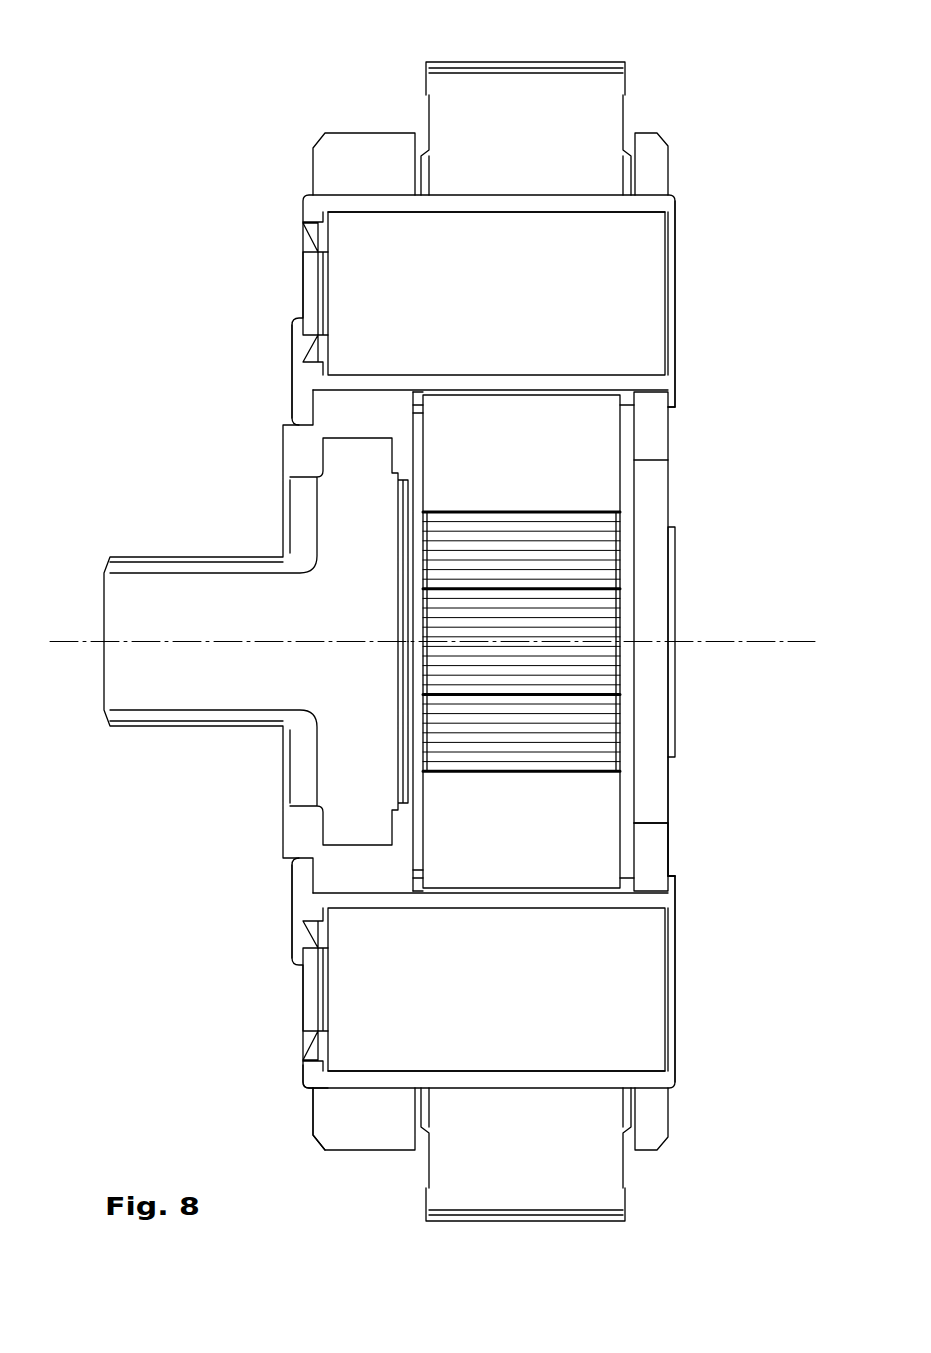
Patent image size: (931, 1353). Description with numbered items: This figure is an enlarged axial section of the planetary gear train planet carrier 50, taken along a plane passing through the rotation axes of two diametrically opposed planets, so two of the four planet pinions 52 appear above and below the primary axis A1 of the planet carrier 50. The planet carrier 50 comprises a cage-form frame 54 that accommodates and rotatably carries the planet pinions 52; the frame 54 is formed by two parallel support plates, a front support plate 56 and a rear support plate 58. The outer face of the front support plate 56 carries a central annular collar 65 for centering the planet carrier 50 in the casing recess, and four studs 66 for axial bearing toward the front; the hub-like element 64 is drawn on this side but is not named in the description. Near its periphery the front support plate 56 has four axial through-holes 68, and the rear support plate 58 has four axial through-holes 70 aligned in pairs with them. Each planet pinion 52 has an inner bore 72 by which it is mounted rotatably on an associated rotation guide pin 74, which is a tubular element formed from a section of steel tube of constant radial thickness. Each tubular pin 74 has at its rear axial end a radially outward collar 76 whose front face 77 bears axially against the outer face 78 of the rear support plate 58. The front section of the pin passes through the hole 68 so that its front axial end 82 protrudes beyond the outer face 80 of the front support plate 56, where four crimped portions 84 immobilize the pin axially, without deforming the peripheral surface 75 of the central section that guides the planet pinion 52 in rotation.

The planet carrier 50 is at (750, 320).
The planet pinion 52 is at (571, 44).
The frame 54 is at (307, 126).
The front support plate 56 is at (340, 1160).
The rear support plate 58 is at (651, 1160).
The hub / shaft 64 is at (160, 748).
The central annular collar 65 is at (285, 838).
The stud 66 is at (292, 925).
The axial through-hole 68 is at (360, 197).
The axial through-hole 70 is at (650, 212).
The inner bore 72 is at (544, 197).
The tubular pin 74 is at (615, 300).
The peripheral surface 75 is at (462, 192).
The collar 76 is at (675, 398).
The front face 77 is at (668, 876).
The outer face 78 is at (675, 861).
The outer face 80 is at (320, 1116).
The front axial end 82 is at (303, 1080).
The crimped portion 84 is at (307, 290).
The primary axis A1 is at (785, 652).